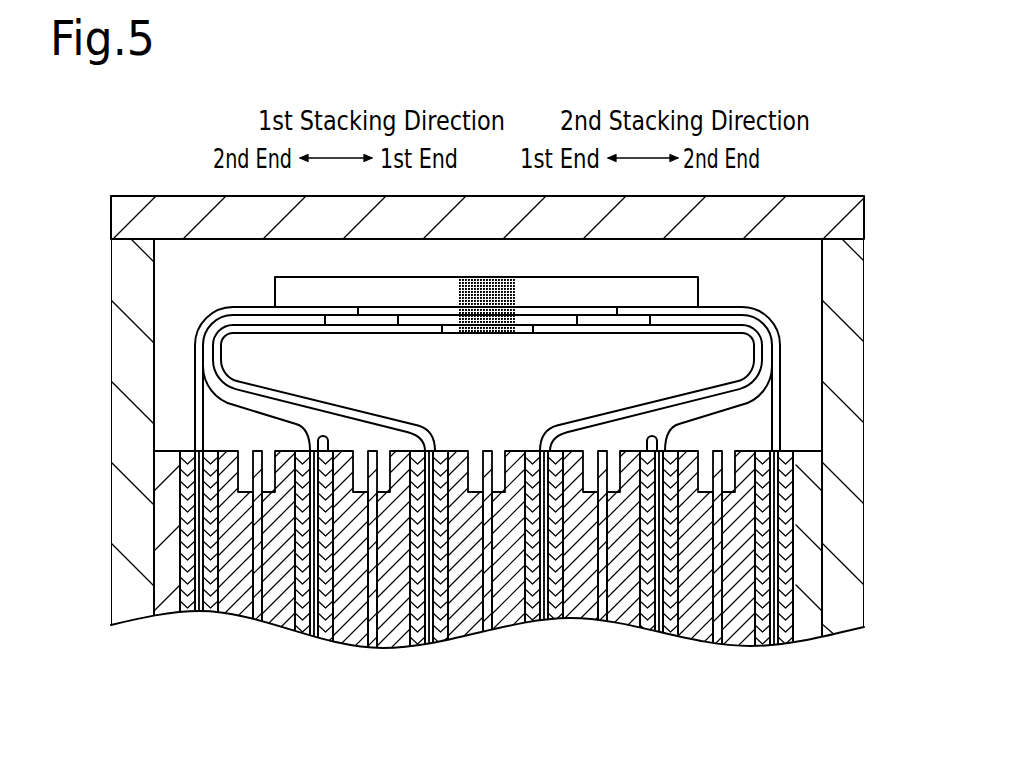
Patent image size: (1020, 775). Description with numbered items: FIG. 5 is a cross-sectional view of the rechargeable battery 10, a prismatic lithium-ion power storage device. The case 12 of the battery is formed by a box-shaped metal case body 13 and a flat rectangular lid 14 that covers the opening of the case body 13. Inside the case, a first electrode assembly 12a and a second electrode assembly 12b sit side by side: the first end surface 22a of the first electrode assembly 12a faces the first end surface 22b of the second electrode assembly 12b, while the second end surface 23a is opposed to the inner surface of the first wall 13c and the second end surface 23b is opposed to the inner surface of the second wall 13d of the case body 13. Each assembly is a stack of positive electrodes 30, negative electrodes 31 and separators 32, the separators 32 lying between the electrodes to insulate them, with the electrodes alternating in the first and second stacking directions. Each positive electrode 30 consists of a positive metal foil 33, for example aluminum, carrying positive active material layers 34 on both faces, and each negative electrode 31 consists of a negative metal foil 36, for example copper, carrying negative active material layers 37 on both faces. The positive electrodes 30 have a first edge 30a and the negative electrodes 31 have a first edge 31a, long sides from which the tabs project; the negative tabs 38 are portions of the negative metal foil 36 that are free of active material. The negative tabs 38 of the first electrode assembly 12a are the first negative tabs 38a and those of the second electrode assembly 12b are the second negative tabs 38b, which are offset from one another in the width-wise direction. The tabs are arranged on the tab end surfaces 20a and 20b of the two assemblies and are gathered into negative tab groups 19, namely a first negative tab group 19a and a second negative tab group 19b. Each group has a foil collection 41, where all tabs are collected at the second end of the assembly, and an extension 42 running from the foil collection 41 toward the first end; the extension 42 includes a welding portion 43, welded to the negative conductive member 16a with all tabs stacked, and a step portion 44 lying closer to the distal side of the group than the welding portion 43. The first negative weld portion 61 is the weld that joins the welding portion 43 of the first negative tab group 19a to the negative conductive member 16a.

The rechargeable battery 10 is at (70, 183).
The case 12 is at (45, 220).
The first electrode assembly 12a is at (178, 512).
The second electrode assembly 12b is at (798, 498).
The case body 13 is at (110, 275).
The first wall 13c is at (110, 360).
The second wall 13d is at (865, 305).
The lid 14 is at (110, 220).
The negative conductive member 16a is at (531, 277).
The connecting member 19 is at (490, 347).
The first negative tab group 19a is at (216, 310).
The second negative tab group 19b is at (738, 305).
The tab end surface 20a is at (303, 437).
The tab end surface 20b is at (672, 437).
The first end surface 22a is at (472, 451).
The first end surface 22b is at (438, 612).
The second end surface 23a is at (178, 543).
The second end surface 23b is at (800, 560).
The positive electrode 30 is at (322, 685).
The first edge 30a is at (502, 451).
The negative electrode 31 is at (720, 685).
The first edge 31a is at (445, 451).
The separator 32 is at (227, 613).
The positive metal foil 33 is at (255, 612).
The positive active material layer 34 is at (241, 613).
The negative metal foil 36 is at (660, 623).
The negative active material layer 37 is at (647, 630).
The negative tab 38 is at (487, 345).
The first negative tab 38a is at (309, 325).
The second negative tab 38b is at (628, 325).
The foil collection 41 is at (194, 350).
The extension 42 is at (345, 306).
The welding portion 43 is at (483, 334).
The step portion 44 is at (526, 334).
The first negative weld portion 61 is at (478, 282).